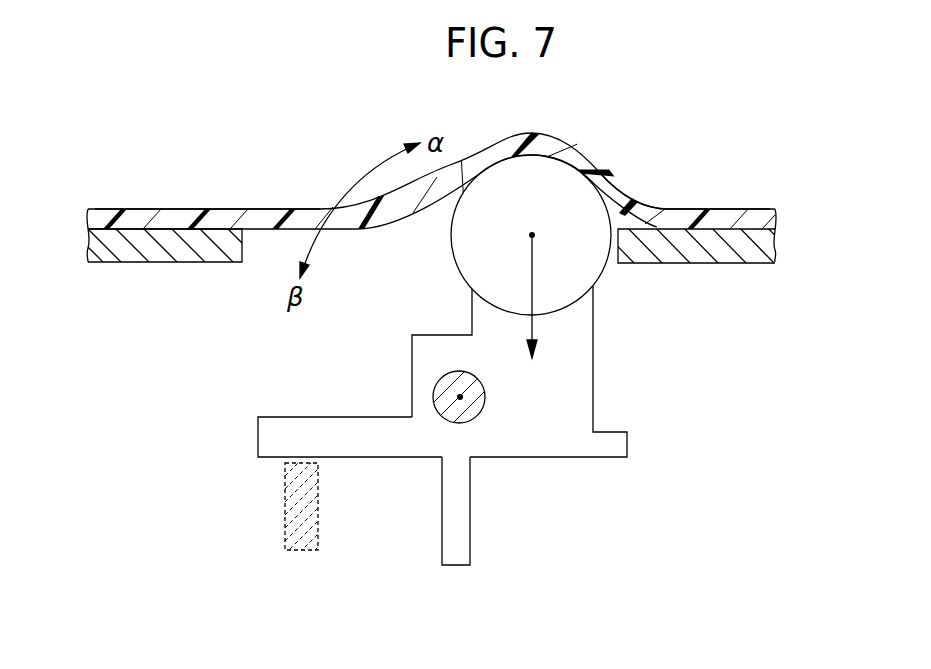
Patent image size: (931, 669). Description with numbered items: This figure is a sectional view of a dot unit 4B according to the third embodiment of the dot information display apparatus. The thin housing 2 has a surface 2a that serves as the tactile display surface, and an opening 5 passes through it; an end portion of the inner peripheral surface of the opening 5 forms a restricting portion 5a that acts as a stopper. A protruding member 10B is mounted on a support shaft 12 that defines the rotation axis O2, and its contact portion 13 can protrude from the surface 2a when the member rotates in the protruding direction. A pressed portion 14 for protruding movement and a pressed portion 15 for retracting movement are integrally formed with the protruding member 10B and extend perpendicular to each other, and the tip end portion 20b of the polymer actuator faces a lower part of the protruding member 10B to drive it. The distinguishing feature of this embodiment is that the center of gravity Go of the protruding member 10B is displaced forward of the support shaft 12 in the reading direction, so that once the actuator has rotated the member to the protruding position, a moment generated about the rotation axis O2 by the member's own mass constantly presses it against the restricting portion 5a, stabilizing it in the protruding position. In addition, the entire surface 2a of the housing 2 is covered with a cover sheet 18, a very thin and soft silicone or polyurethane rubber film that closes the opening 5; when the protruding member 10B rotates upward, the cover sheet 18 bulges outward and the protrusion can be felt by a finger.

The housing 2 is at (732, 265).
The surface 2a is at (158, 216).
The dot unit 4B is at (617, 94).
The opening 5 is at (199, 252).
The restricting portion 5a is at (607, 206).
The protruding member 10B is at (616, 385).
The support shaft 12 is at (440, 383).
The contact portion 13 is at (552, 177).
The pressed portion for protruding movement 14 is at (273, 436).
The pressed portion for retracting movement 15 is at (460, 556).
The cover sheet 18 is at (263, 217).
The tip end portion 20b is at (283, 525).
The center of gravity Go is at (532, 232).
The rotation axis O2 is at (440, 415).